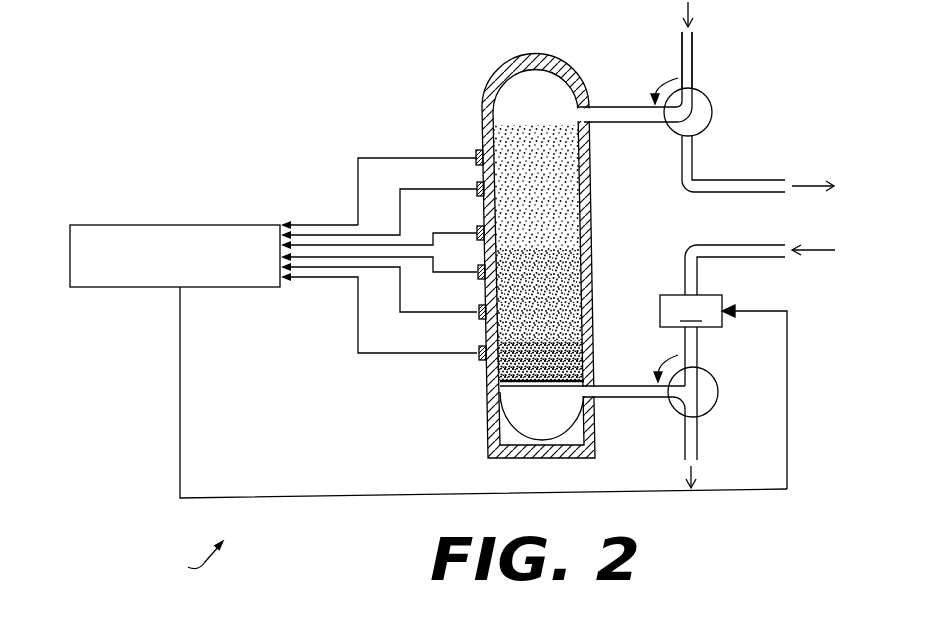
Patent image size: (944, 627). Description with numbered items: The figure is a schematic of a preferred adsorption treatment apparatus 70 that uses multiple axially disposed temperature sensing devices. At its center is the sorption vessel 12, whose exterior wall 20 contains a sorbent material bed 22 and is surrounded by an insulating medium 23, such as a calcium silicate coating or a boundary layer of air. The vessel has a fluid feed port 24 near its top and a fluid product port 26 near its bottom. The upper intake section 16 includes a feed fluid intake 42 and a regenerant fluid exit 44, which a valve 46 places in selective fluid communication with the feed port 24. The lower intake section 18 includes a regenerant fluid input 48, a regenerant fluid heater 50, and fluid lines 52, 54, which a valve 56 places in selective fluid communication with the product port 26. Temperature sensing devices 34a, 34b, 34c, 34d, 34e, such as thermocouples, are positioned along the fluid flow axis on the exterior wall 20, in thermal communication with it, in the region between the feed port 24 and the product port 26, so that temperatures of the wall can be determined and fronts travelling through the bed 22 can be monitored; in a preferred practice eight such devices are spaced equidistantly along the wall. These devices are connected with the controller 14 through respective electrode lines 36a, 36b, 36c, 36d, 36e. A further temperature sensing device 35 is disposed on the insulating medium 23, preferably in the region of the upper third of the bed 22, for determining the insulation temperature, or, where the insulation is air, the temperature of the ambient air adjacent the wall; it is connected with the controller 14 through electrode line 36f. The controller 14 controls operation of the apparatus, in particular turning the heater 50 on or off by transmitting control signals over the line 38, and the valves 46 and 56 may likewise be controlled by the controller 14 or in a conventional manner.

The sorption vessel 12 is at (524, 246).
The controller 14 is at (178, 224).
The upper intake section 16 is at (742, 97).
The lower intake section 18 is at (757, 367).
The exterior wall 20 is at (543, 80).
The sorbent material bed 22 is at (554, 254).
The insulating medium 23 is at (587, 240).
The fluid feed port 24 is at (595, 104).
The fluid product port 26 is at (599, 382).
The temperature sensing device 34a is at (477, 189).
The temperature sensing device 34b is at (477, 232).
The temperature sensing device 34c is at (478, 272).
The temperature sensing device 34d is at (479, 313).
The temperature sensing device 34e is at (479, 354).
The insulation temperature sensing device 35 is at (476, 156).
The electrode line 36a is at (313, 224).
The electrode line 36b is at (328, 236).
The electrode line 36c is at (311, 258).
The electrode line 36d is at (327, 268).
The electrode line 36e is at (343, 278).
The electrode line 36f is at (388, 157).
The line 38 is at (422, 496).
The feed fluid intake 42 is at (697, 58).
The regenerant fluid exit 44 is at (725, 176).
The valve 46 is at (713, 100).
The regenerant fluid input 48 is at (745, 258).
The regenerant fluid heater 50 is at (723, 392).
The fluid line 52 is at (697, 343).
The fluid line 54 is at (697, 430).
The valve 56 is at (716, 384).
The adsorption apparatus 70 is at (192, 560).